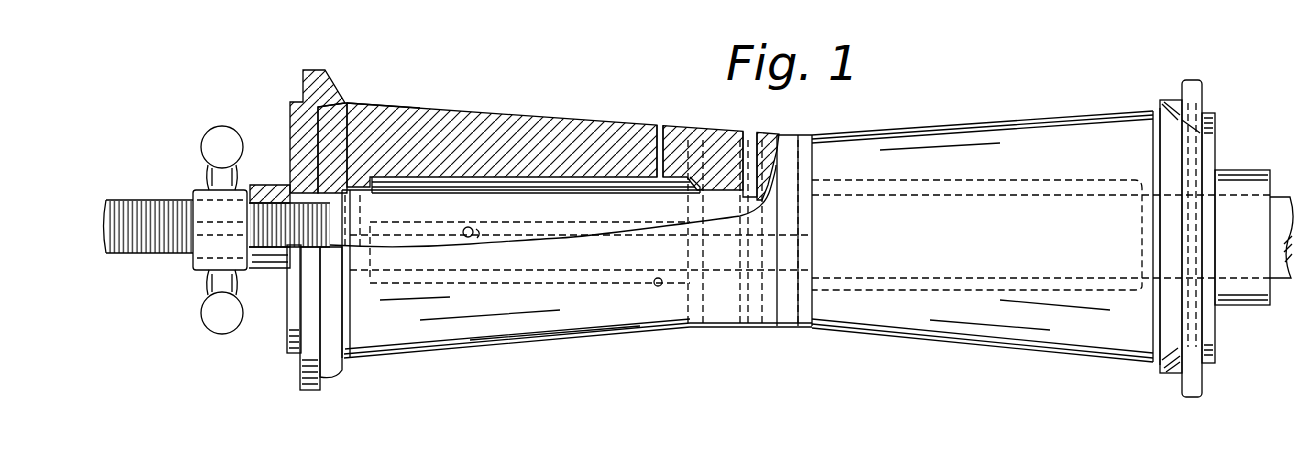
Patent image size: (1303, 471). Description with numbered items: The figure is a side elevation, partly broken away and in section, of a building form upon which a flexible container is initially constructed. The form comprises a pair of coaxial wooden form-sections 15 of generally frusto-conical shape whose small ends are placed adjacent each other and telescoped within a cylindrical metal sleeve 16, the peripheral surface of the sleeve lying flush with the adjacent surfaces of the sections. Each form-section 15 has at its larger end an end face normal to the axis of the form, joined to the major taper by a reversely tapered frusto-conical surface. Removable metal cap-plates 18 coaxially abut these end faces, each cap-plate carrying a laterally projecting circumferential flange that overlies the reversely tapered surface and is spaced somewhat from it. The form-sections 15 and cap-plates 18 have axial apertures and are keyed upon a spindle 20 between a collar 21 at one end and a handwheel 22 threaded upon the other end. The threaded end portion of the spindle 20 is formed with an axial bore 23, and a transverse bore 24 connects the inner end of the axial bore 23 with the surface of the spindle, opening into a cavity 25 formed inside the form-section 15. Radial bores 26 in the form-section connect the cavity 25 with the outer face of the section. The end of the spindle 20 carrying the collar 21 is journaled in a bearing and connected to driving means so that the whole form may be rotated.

The form-section 15 is at (521, 118).
The cylindrical metal sleeve 16 is at (733, 135).
The cap-plate 18 is at (298, 374).
The spindle 20 is at (141, 256).
The collar 21 is at (1246, 306).
The handwheel 22 is at (216, 331).
The axial bore 23 is at (208, 222).
The transverse bore 24 is at (467, 238).
The cavity 25 is at (576, 178).
The radial bore 26 is at (660, 126).